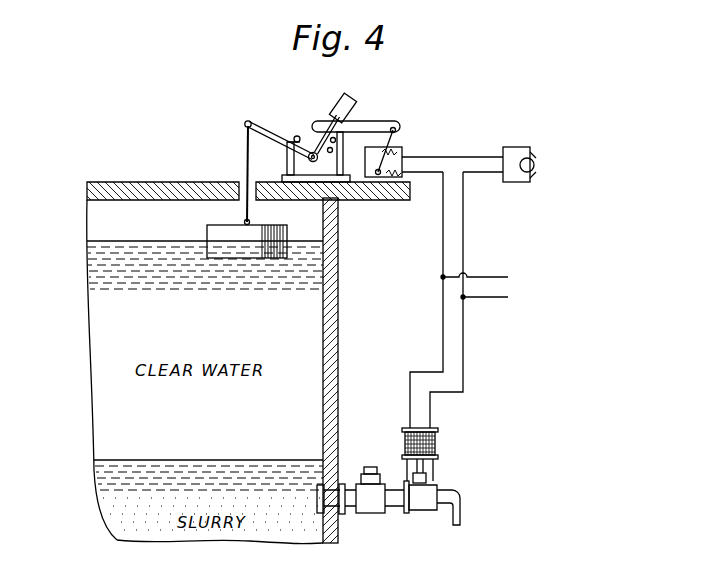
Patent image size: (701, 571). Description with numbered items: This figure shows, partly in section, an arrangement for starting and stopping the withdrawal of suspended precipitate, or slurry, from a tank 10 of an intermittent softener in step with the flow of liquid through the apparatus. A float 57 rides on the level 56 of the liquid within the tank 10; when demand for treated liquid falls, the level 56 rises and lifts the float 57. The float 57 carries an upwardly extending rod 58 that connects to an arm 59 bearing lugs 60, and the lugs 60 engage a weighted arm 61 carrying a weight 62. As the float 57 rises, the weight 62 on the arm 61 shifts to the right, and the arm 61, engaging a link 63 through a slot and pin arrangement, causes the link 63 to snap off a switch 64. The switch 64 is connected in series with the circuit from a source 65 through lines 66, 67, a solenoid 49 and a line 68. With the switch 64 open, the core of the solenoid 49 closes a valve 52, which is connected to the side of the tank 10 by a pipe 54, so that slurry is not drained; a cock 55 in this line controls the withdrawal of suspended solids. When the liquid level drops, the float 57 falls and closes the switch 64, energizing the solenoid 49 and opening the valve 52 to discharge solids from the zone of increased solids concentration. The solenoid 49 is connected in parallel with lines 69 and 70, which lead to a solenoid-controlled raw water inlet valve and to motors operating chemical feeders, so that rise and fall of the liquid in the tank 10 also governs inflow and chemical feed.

The tank 10 is at (340, 322).
The solenoid 49 is at (438, 440).
The valve 52 is at (423, 511).
The pipe 54 is at (346, 486).
The cock 55 is at (370, 513).
The level 56 is at (122, 240).
The float 57 is at (212, 228).
The rod 58 is at (245, 150).
The arm 59 is at (252, 121).
The lugs 60 is at (312, 140).
The weighted arm 61 is at (350, 98).
The weight 62 is at (355, 112).
The link 63 is at (395, 127).
The switch 64 is at (402, 150).
The source 65 is at (536, 164).
The line 66 is at (464, 156).
The line 67 is at (424, 177).
The line 68 is at (465, 220).
The line 69 is at (500, 277).
The line 70 is at (500, 300).